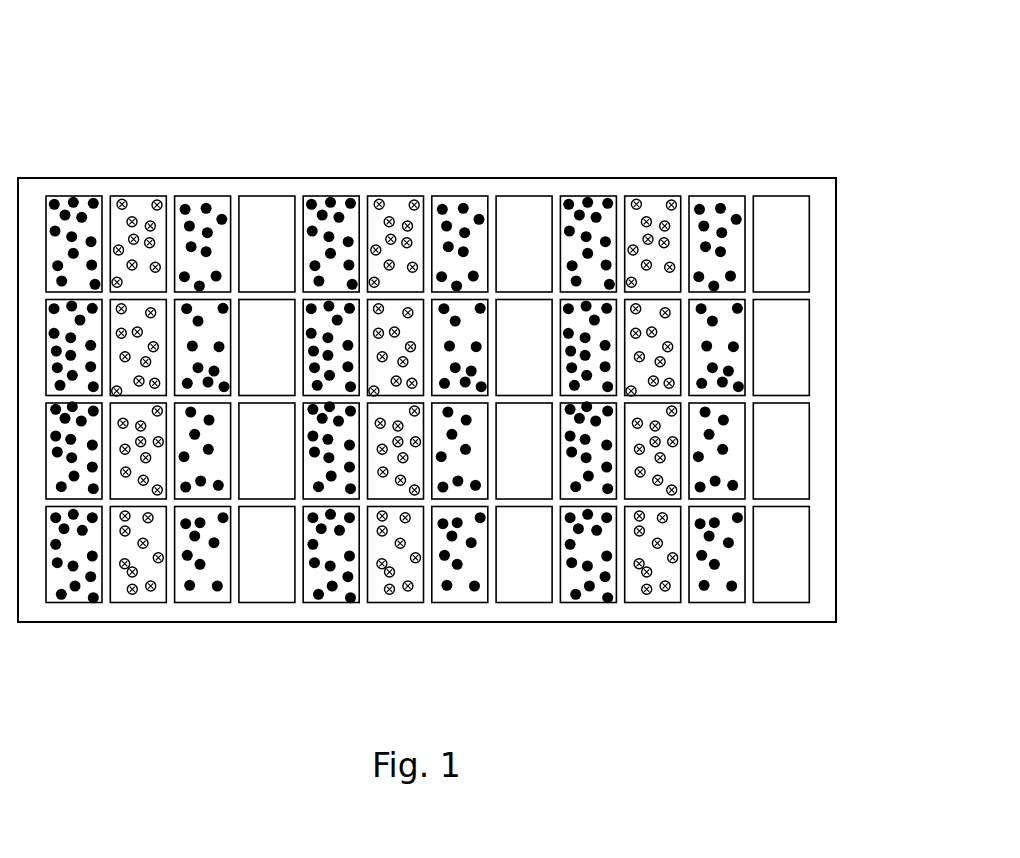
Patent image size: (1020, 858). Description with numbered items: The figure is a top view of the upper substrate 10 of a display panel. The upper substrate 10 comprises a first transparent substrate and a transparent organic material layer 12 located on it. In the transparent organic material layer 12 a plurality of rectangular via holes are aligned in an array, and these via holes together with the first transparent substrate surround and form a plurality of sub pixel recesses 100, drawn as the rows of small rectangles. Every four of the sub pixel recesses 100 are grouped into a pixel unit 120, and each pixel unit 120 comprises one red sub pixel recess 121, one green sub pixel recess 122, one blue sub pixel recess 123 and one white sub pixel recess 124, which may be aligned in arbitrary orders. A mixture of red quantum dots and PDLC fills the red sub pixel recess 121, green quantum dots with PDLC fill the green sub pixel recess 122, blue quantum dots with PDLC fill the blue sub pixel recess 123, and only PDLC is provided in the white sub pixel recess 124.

The upper substrate 10 is at (90, 177).
The transparent organic material layer 12 is at (823, 240).
The sub pixel recesses 100 is at (810, 347).
The pixel unit 120 is at (430, 158).
The red sub pixel recess 121 is at (330, 203).
The green sub pixel recess 122 is at (405, 227).
The blue sub pixel recess 123 is at (463, 210).
The white sub pixel recess 124 is at (525, 184).